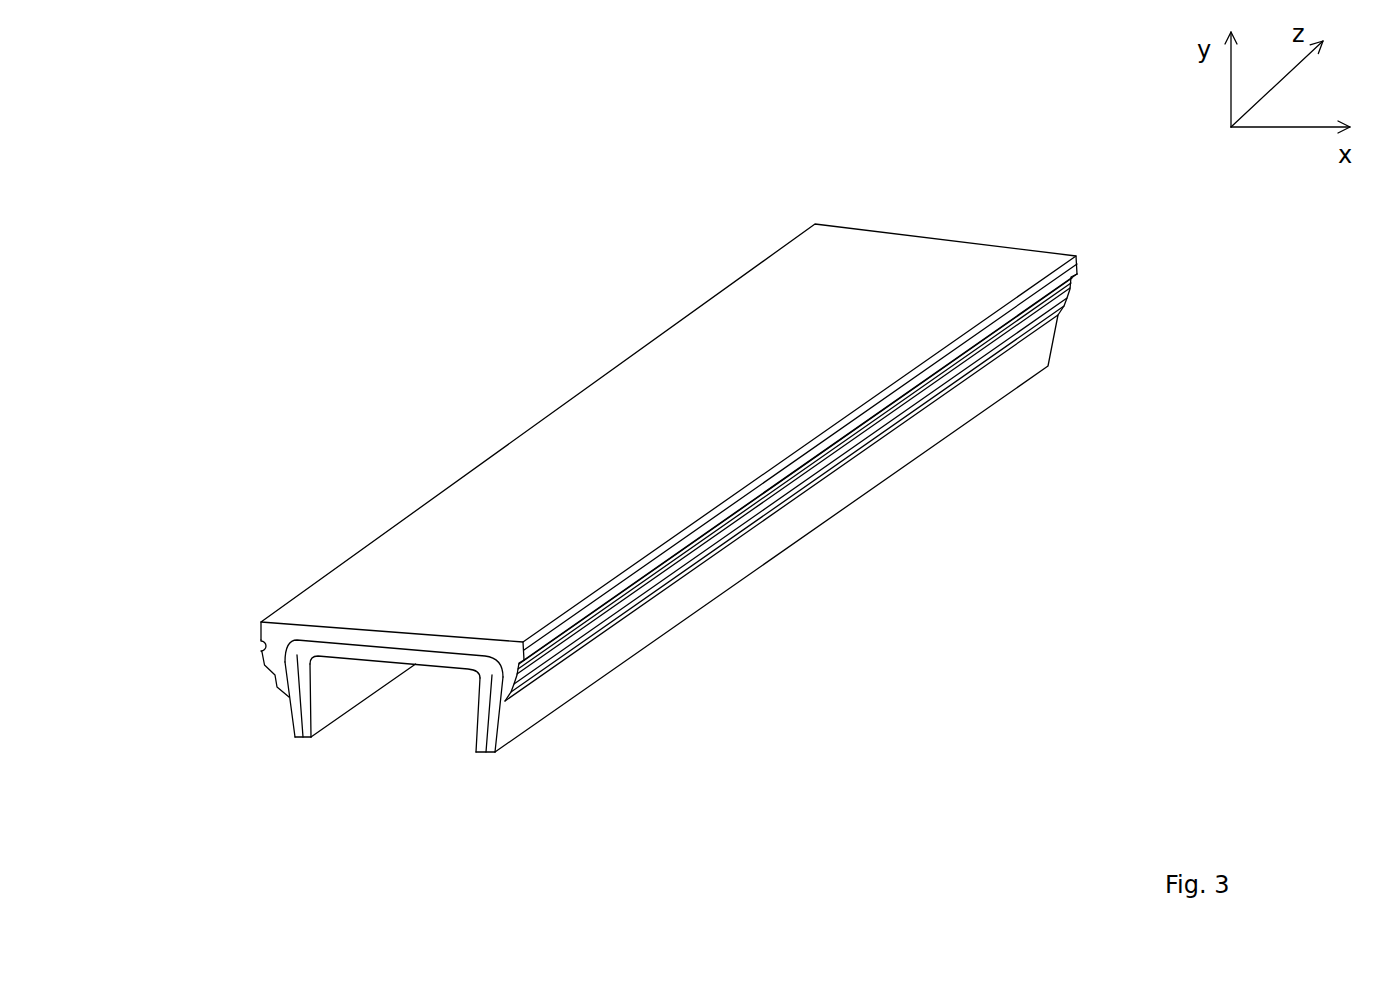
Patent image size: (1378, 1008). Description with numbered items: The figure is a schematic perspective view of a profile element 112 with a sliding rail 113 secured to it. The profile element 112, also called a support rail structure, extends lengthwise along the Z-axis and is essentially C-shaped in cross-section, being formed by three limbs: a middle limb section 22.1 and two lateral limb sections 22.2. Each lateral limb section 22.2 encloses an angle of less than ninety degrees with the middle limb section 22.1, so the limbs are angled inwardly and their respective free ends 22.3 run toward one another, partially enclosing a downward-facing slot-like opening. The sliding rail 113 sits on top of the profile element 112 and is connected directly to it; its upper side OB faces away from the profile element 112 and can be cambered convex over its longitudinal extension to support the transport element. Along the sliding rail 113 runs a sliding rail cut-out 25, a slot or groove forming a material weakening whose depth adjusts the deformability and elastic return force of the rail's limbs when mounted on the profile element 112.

The sliding rail 113 is at (669, 413).
The upper side OB is at (929, 261).
The sliding rail cut-out 25 is at (1079, 283).
The middle limb section 22.1 is at (409, 663).
The lateral limb sections 22.2 is at (287, 695).
The free ends 22.3 is at (297, 746).
The profile element 112 is at (560, 690).